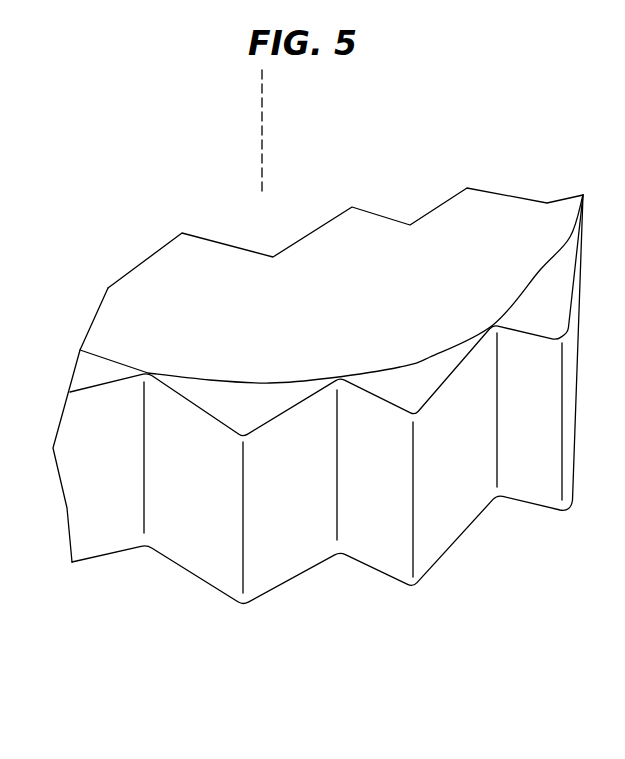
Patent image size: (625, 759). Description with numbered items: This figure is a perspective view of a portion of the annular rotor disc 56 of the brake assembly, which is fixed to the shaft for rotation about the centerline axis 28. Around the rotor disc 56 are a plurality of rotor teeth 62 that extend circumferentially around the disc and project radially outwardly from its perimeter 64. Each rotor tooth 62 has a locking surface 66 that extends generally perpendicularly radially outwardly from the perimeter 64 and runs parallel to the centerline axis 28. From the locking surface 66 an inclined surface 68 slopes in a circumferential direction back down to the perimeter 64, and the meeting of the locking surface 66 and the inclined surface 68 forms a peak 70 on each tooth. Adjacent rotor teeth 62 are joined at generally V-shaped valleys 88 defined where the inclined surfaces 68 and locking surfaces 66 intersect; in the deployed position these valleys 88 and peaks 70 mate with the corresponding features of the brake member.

The centerline axis 28 is at (262, 127).
The rotor disc 56 is at (158, 246).
The rotor teeth 62 is at (258, 572).
The perimeter 64 is at (267, 381).
The locking surface 66 is at (382, 443).
The inclined surface 68 is at (448, 424).
The peak 70 is at (438, 565).
The V-shaped valleys 88 is at (338, 503).